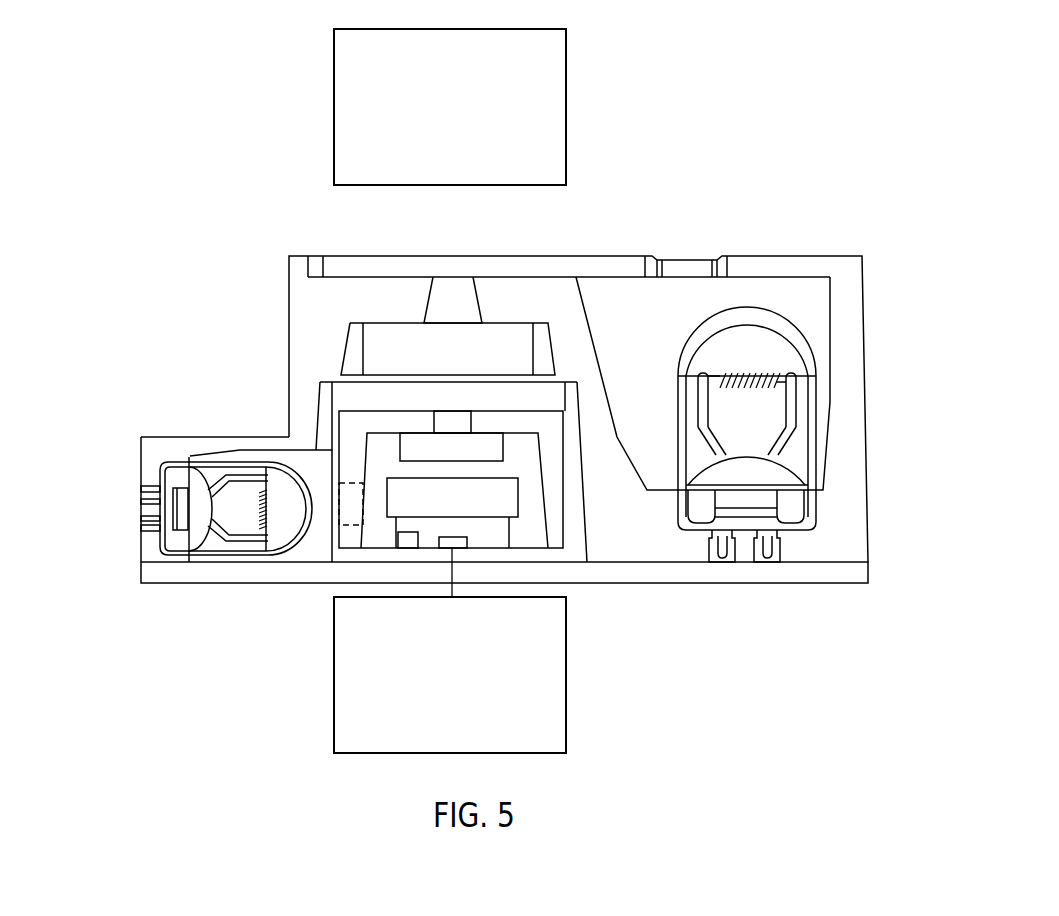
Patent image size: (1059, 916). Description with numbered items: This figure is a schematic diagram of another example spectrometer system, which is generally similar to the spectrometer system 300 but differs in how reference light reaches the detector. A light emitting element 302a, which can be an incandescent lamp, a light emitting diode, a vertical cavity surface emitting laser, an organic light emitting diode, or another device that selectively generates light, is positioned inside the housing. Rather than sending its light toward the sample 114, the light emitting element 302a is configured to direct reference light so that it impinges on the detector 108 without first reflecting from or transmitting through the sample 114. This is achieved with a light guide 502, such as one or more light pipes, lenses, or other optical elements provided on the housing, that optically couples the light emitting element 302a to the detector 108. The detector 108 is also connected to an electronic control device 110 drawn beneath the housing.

The spectrometer system 300 is at (718, 131).
The sample 114 is at (431, 137).
The electronic control device 110 is at (431, 721).
The detector 108 is at (453, 540).
The light guide 502 is at (350, 513).
The light emitting element 302a is at (200, 508).